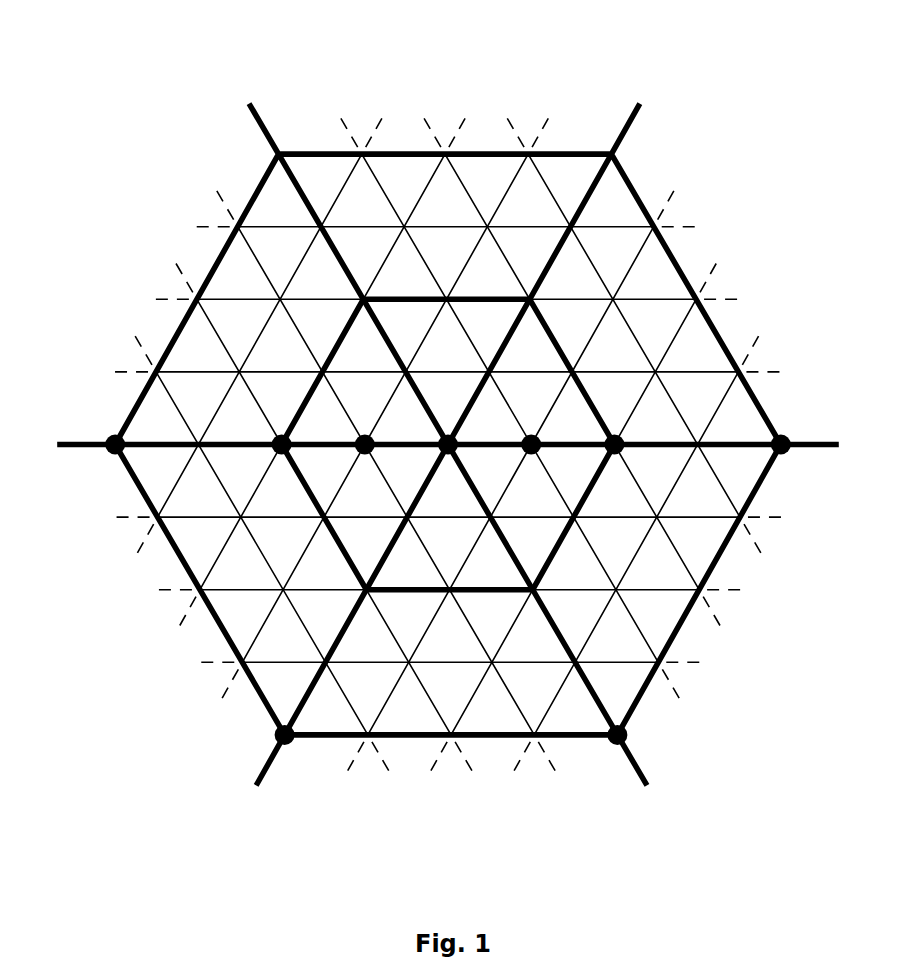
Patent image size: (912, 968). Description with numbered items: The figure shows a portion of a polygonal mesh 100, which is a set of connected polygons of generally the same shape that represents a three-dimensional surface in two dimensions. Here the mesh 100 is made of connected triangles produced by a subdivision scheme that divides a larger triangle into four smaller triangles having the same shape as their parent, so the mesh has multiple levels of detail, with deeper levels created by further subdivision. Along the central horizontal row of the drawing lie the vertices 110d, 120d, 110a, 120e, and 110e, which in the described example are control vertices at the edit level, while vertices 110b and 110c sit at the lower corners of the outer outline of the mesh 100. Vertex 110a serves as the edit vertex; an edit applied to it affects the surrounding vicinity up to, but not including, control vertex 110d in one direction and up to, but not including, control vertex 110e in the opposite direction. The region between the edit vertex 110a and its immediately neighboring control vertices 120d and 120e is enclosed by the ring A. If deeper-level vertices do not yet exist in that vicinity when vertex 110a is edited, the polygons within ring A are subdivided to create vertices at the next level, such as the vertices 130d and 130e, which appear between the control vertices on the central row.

The polygonal mesh 100 is at (722, 46).
The ring A is at (414, 297).
The control vertex 110a is at (450, 452).
The vertex 110b is at (285, 745).
The vertex 110c is at (617, 745).
The control vertex 110d is at (114, 455).
The control vertex 110e is at (783, 452).
The control vertex 120d is at (274, 452).
The control vertex 120e is at (623, 449).
The vertex 130d is at (355, 456).
The vertex 130e is at (536, 452).